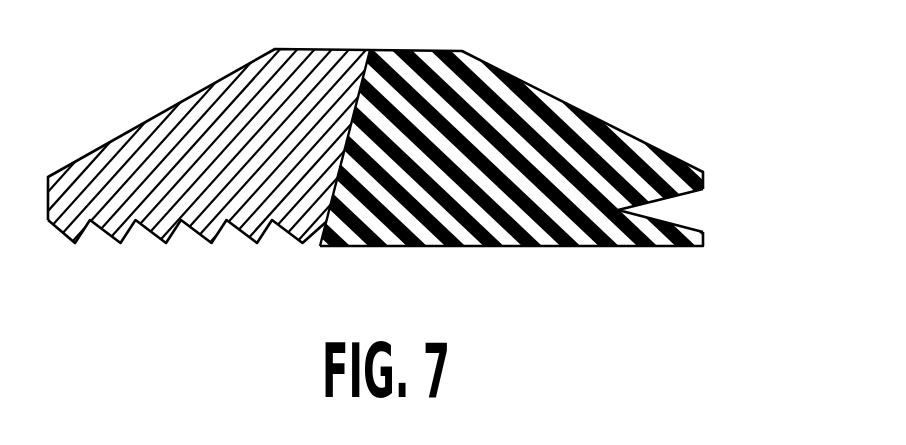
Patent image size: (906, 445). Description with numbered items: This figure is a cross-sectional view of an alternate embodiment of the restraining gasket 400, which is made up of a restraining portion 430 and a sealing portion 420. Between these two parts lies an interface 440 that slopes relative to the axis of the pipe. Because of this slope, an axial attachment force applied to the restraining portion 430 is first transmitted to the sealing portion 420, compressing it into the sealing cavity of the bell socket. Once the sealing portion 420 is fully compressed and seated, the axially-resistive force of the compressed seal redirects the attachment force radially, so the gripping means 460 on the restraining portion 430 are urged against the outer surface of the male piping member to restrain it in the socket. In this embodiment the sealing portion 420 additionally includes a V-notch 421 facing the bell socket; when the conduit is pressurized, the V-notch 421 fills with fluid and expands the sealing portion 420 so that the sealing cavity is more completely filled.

The restraining gasket 400 is at (580, 112).
The sealing portion 420 is at (703, 272).
The V-notch 421 is at (640, 194).
The restraining portion 430 is at (320, 272).
The interface 440 is at (322, 157).
The gripping means 460 is at (151, 236).